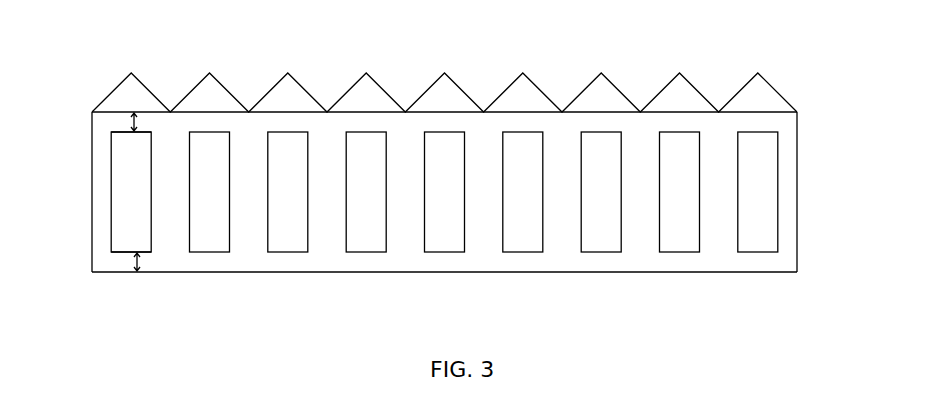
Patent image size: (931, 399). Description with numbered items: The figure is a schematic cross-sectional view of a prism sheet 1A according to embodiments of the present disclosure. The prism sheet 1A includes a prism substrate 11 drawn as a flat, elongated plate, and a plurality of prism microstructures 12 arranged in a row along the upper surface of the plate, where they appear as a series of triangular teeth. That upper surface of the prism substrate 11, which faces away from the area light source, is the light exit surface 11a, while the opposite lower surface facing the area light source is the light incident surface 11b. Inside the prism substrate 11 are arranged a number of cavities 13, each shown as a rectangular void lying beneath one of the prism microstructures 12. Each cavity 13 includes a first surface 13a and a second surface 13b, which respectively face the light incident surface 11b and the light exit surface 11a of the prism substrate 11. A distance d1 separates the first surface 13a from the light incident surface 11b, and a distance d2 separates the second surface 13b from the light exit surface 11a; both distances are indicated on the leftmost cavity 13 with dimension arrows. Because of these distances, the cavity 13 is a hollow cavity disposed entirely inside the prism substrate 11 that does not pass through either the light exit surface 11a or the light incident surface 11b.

The prism sheet 1A is at (132, 25).
The prism substrate 11 is at (790, 150).
The light exit surface 11a is at (787, 110).
The light incident surface 11b is at (775, 273).
The prism microstructures 12 is at (682, 102).
The cavity 13 is at (763, 183).
The first surface 13a is at (125, 253).
The second surface 13b is at (118, 132).
The distance d1 is at (154, 261).
The distance d2 is at (153, 125).